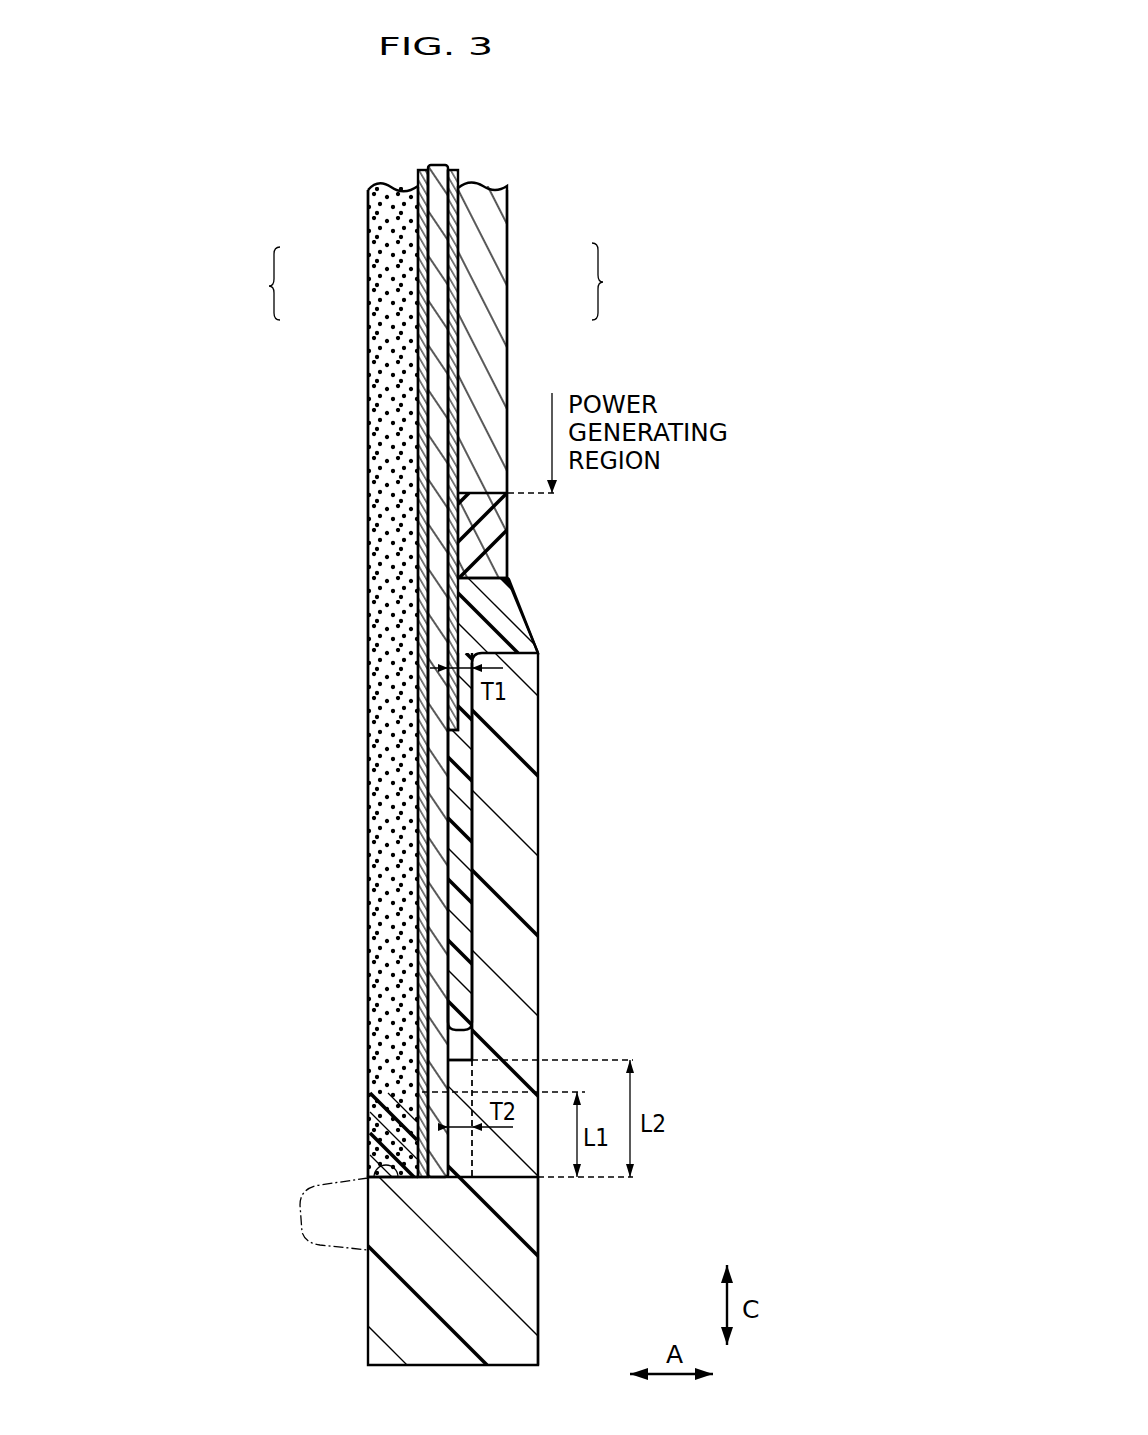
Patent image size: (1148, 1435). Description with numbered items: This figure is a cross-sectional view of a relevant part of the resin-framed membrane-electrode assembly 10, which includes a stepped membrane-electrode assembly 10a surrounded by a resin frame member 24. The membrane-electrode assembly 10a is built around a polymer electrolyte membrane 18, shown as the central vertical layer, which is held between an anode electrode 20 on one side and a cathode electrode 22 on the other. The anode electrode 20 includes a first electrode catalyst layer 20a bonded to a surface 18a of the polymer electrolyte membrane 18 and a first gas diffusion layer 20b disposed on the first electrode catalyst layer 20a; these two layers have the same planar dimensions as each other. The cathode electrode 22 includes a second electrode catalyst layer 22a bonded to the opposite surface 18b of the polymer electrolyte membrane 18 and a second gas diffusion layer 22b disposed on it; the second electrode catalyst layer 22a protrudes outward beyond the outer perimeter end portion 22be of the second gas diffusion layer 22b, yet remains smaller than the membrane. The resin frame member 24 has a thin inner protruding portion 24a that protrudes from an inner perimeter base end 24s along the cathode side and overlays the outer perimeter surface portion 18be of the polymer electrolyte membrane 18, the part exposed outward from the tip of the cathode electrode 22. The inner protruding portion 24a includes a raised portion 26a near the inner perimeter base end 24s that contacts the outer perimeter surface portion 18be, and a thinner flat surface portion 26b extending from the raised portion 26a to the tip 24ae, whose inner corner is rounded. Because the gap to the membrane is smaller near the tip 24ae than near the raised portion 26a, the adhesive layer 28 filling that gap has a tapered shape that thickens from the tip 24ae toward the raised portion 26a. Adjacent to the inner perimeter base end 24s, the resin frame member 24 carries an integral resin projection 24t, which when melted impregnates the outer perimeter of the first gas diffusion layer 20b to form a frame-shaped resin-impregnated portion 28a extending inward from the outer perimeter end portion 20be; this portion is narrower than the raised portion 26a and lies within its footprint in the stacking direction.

The resin-framed membrane-electrode assembly 10 is at (592, 110).
The membrane-electrode assembly 10a is at (366, 196).
The polymer electrolyte membrane 18 is at (437, 166).
The surface of the polymer electrolyte membrane 18a is at (426, 228).
The surface of the polymer electrolyte membrane 18b is at (450, 228).
The outer perimeter surface portion 18be is at (450, 1002).
The anode electrode 20 is at (304, 683).
The first electrode catalyst layer 20a is at (425, 267).
The first gas diffusion layer 20b is at (393, 305).
The outer perimeter end portion of the first gas diffusion layer 20be is at (407, 1179).
The cathode electrode 22 is at (572, 384).
The second electrode catalyst layer 22a is at (457, 264).
The second gas diffusion layer 22b is at (477, 300).
The outer perimeter end portion of the second gas diffusion layer 22be is at (494, 594).
The resin frame member 24 is at (366, 1345).
The inner protruding portion 24a is at (517, 950).
The tip of the inner protruding portion 24ae is at (488, 648).
The inner perimeter base end 24s is at (372, 1166).
The resin projection 24t is at (306, 1243).
The raised portion 26a is at (458, 1073).
The flat surface portion 26b is at (467, 917).
The adhesive layer 28 is at (457, 882).
The resin-impregnated portion 28a is at (380, 1112).